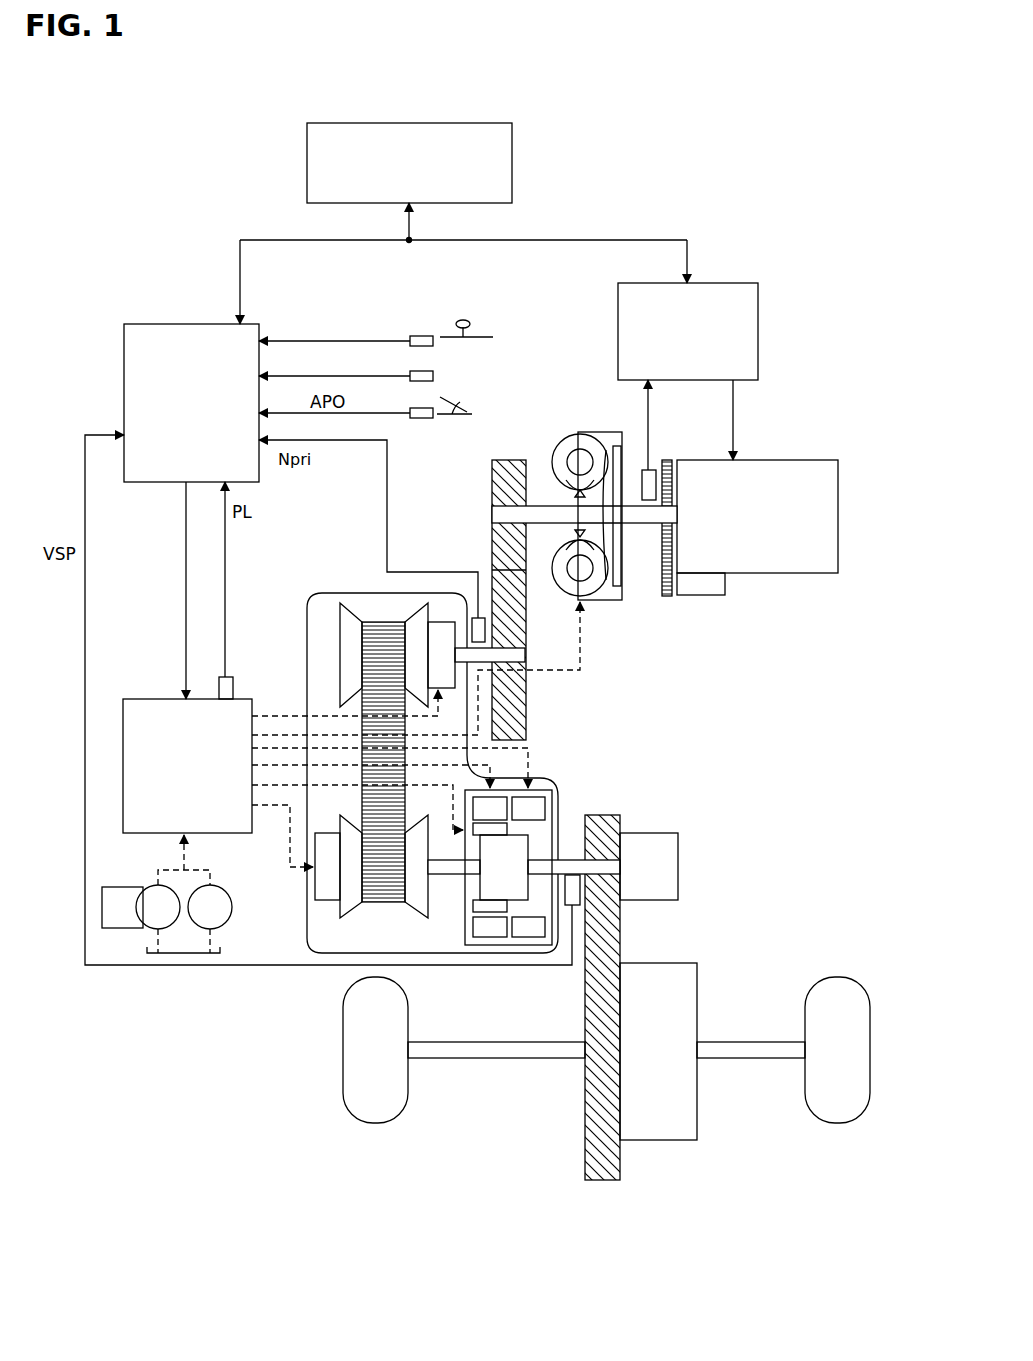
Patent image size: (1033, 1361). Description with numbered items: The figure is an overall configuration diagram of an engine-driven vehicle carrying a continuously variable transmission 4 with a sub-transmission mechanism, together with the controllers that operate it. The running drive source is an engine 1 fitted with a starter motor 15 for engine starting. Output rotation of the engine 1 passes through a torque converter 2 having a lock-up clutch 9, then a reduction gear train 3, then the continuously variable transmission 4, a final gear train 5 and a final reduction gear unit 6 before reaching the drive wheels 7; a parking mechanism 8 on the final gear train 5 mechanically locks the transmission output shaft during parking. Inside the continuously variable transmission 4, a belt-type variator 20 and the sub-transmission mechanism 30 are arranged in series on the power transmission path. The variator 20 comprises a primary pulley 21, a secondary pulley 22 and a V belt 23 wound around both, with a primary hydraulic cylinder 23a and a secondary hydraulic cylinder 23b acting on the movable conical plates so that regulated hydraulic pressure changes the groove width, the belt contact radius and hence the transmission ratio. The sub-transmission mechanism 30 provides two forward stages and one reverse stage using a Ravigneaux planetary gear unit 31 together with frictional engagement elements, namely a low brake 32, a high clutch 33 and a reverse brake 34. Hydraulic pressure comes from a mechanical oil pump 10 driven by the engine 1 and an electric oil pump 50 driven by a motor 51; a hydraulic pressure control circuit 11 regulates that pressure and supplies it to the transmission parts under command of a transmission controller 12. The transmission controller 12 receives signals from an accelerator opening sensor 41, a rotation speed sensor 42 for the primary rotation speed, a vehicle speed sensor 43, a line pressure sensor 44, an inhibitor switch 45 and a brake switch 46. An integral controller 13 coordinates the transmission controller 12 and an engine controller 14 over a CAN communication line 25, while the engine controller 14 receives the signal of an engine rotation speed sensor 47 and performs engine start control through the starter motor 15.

The engine 1 is at (822, 482).
The torque converter 2 is at (583, 430).
The reduction gear train 3 is at (513, 458).
The continuously variable transmission 4 is at (341, 590).
The final gear train 5 is at (606, 1184).
The final reduction gear unit 6 is at (673, 1125).
The drive wheels 7 is at (378, 1115).
The parking mechanism 8 is at (660, 847).
The lock-up clutch 9 is at (622, 553).
The mechanical oil pump 10 is at (218, 884).
The hydraulic pressure control circuit 11 is at (142, 710).
The transmission controller 12 is at (194, 340).
The integral controller 13 is at (512, 140).
The engine controller 14 is at (740, 283).
The starter motor 15 is at (698, 595).
The variator 20 is at (331, 626).
The primary pulley 21 is at (356, 644).
The secondary pulley 22 is at (355, 888).
The V belt 23 is at (382, 626).
The primary hydraulic cylinder 23a is at (444, 632).
The secondary hydraulic cylinder 23b is at (330, 873).
The CAN communication line 25 is at (520, 240).
The sub-transmission mechanism 30 is at (552, 808).
The Ravigneaux planetary gear unit 31 is at (508, 881).
The low brake 32 is at (497, 806).
The high clutch 33 is at (480, 905).
The reverse brake 34 is at (538, 804).
The accelerator opening sensor 41 is at (420, 420).
The rotation speed sensor 42 is at (480, 620).
The vehicle speed sensor 43 is at (585, 889).
The line pressure sensor 44 is at (233, 682).
The inhibitor switch 45 is at (421, 335).
The brake switch 46 is at (433, 376).
The engine rotation speed sensor 47 is at (644, 475).
The electric oil pump 50 is at (150, 884).
The motor 51 is at (126, 886).